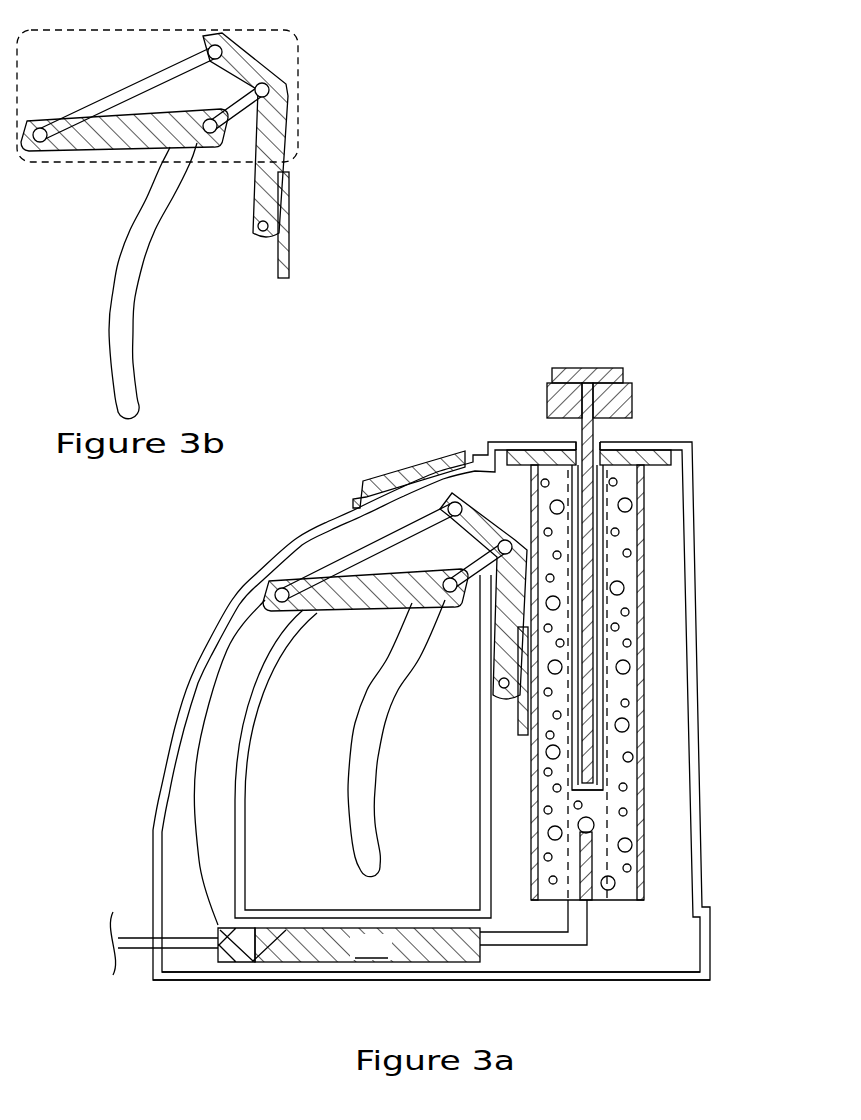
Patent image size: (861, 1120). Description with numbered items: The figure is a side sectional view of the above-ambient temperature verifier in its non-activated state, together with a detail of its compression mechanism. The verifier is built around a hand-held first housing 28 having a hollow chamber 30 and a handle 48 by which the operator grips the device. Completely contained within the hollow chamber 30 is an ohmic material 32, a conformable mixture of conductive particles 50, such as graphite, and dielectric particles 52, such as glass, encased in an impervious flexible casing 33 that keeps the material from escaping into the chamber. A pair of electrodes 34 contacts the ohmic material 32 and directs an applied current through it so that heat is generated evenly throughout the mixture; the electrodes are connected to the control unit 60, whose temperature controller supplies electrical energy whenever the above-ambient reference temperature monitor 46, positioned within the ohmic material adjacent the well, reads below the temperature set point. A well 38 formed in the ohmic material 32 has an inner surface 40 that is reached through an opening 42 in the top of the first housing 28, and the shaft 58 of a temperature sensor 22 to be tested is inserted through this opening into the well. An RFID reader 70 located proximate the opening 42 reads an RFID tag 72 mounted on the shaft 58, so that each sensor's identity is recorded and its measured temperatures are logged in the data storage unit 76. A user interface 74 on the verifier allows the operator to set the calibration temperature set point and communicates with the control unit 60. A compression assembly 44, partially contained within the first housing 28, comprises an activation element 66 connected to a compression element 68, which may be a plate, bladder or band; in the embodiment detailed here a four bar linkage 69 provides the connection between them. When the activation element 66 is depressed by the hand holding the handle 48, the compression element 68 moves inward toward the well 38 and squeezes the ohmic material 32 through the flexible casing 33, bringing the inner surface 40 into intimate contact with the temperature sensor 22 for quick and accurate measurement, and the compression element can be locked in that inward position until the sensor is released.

In FIG. 3A, the temperature sensor 22 is at (600, 368).
In FIG. 3A, the first housing 28 is at (698, 645).
In FIG. 3A, the hollow chamber 30 is at (660, 938).
In FIG. 3A, the ohmic material 32 is at (620, 690).
In FIG. 3A, the flexible casing 33 is at (644, 720).
In FIG. 3A, the electrodes 34 is at (598, 817).
In FIG. 3A, the well 38 is at (598, 777).
In FIG. 3A, the inner surface 40 is at (603, 760).
In FIG. 3A, the opening 42 is at (576, 435).
In FIG. 3B, the compression assembly 44 is at (338, 108).
In FIG. 3A, the compression assembly 44 is at (381, 705).
In FIG. 3A, the above-ambient reference temperature monitor 46 is at (594, 828).
In FIG. 3A, the handle 48 is at (205, 653).
In FIG. 3A, the conductive particles 50 is at (632, 553).
In FIG. 3A, the dielectric particles 52 is at (624, 590).
In FIG. 3A, the shaft 58 is at (603, 428).
In FIG. 3A, the control unit 60 is at (402, 931).
In FIG. 3B, the activation element 66 is at (115, 268).
In FIG. 3A, the activation element 66 is at (358, 725).
In FIG. 3B, the compression element 68 is at (278, 265).
In FIG. 3A, the compression element 68 is at (518, 712).
In FIG. 3B, the four bar linkage 69 is at (298, 57).
In FIG. 3A, the RFID reader 70 is at (672, 463).
In FIG. 3A, the RFID tag 72 is at (632, 400).
In FIG. 3A, the user interface 74 is at (436, 462).
In FIG. 3A, the data storage unit 76 is at (237, 962).